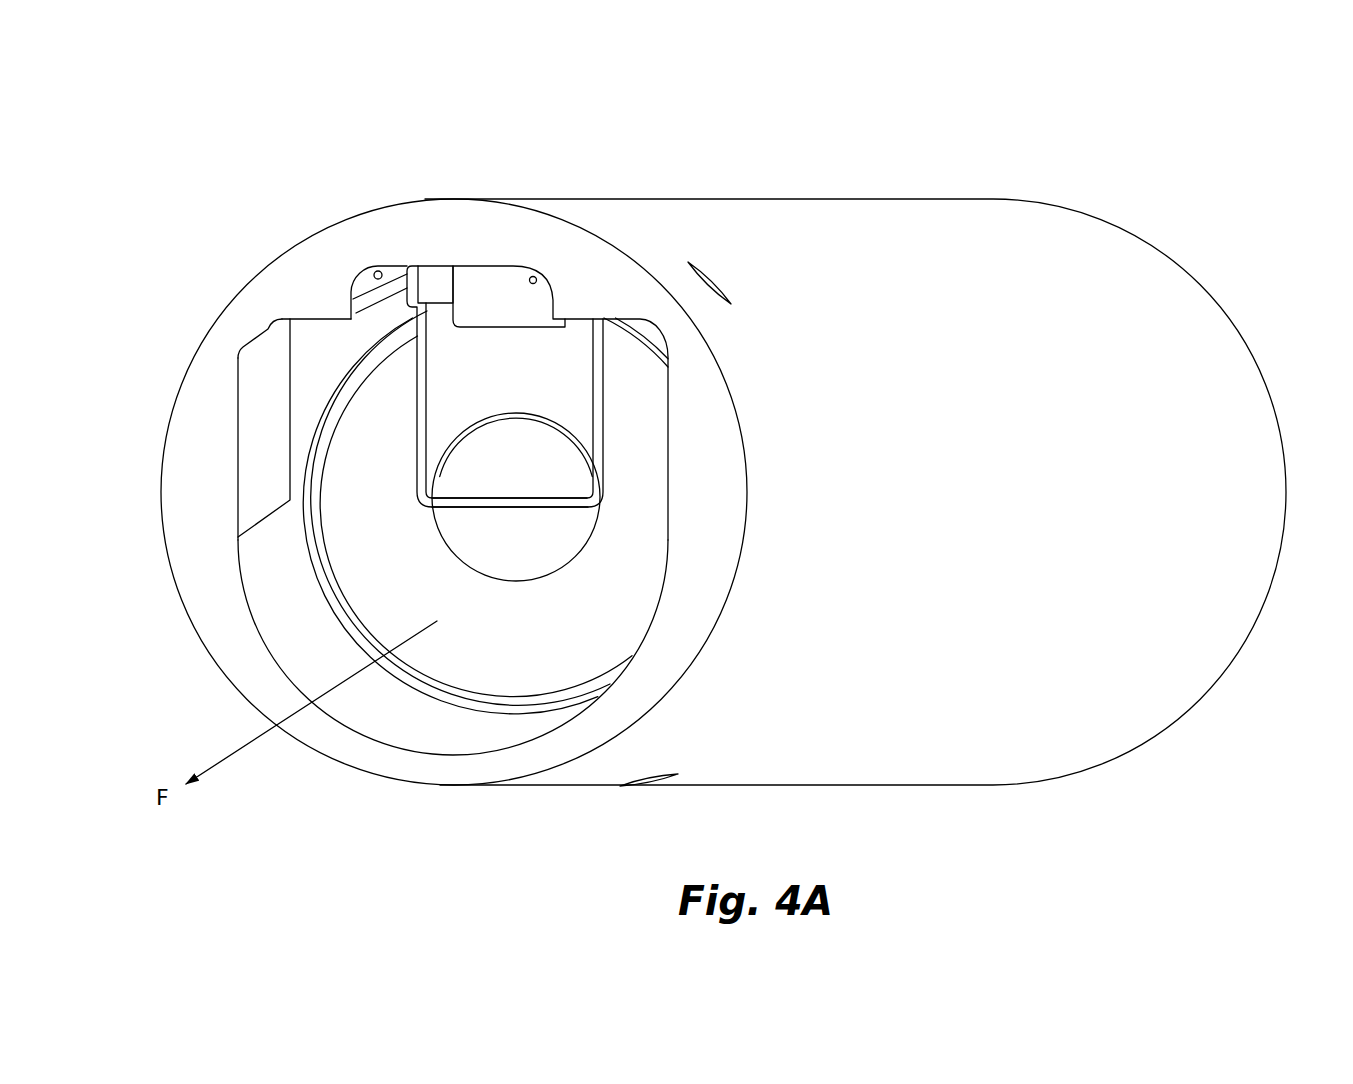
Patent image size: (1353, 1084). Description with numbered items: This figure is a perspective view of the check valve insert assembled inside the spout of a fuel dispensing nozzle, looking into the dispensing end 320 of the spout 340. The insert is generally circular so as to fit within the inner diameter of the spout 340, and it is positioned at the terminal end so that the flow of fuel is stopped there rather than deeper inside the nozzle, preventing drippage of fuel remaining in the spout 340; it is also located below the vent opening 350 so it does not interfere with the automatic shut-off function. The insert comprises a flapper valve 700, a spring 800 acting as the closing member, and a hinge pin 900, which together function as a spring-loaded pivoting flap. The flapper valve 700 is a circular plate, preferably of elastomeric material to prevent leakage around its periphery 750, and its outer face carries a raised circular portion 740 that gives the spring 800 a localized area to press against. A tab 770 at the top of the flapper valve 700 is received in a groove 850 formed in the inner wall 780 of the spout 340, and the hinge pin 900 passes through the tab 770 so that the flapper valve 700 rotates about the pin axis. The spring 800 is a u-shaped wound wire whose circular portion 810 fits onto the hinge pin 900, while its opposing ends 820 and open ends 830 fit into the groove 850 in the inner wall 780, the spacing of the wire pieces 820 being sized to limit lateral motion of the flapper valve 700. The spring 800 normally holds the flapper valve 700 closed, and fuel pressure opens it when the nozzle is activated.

The dispensing end 320 is at (362, 767).
The spout 340 is at (1066, 426).
The vent opening 350 is at (666, 791).
The flapper valve 700 is at (532, 637).
The raised circular portion 740 is at (540, 465).
The periphery 750 is at (447, 700).
The tab 770 is at (513, 296).
The inner wall 780 is at (237, 432).
The spring 800 is at (413, 372).
The circular portion 810 is at (411, 283).
The opposing end 820 is at (493, 503).
The open end 830 is at (374, 272).
The groove 850 is at (268, 332).
The hinge pin 900 is at (437, 290).